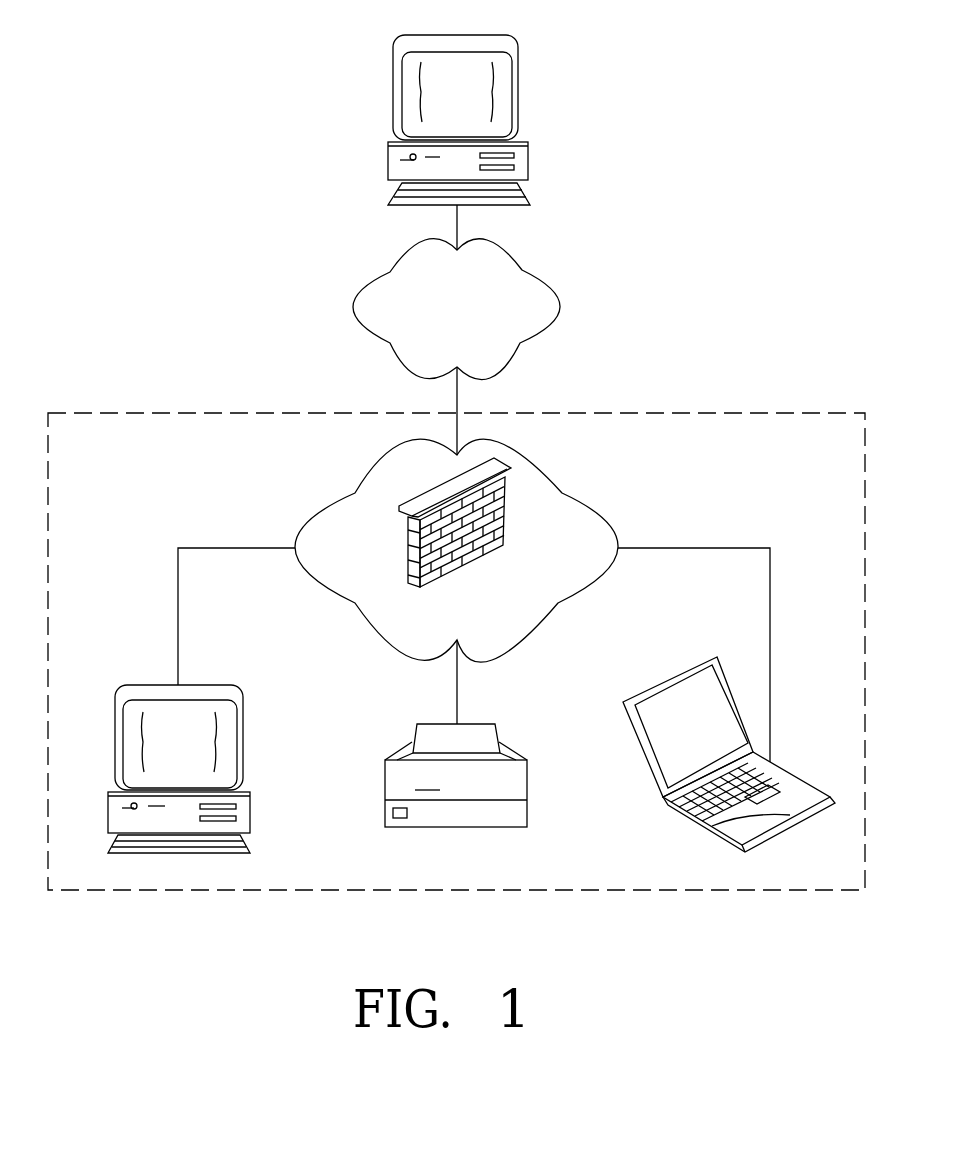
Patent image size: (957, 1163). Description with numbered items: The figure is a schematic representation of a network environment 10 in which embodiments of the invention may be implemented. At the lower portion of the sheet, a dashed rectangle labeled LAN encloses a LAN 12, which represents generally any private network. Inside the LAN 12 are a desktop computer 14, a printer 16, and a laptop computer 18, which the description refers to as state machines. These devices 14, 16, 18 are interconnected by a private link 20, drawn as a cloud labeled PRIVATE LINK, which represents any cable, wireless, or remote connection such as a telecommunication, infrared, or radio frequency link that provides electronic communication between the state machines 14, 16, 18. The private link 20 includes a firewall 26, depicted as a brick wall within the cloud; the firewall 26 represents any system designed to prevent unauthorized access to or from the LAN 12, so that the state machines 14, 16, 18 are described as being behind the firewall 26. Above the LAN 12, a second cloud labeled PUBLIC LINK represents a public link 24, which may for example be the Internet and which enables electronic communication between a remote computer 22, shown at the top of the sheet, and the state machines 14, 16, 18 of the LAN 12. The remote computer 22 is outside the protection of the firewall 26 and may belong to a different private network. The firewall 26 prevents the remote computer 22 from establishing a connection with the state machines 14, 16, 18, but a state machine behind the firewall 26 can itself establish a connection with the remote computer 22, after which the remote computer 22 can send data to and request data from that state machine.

The network environment 10 is at (231, 45).
The LAN 12 is at (100, 410).
The desktop computer 14 is at (252, 812).
The printer 16 is at (518, 786).
The laptop computer 18 is at (710, 830).
The private link 20 is at (535, 467).
The remote computer 22 is at (530, 147).
The public link 24 is at (512, 262).
The firewall 26 is at (507, 530).